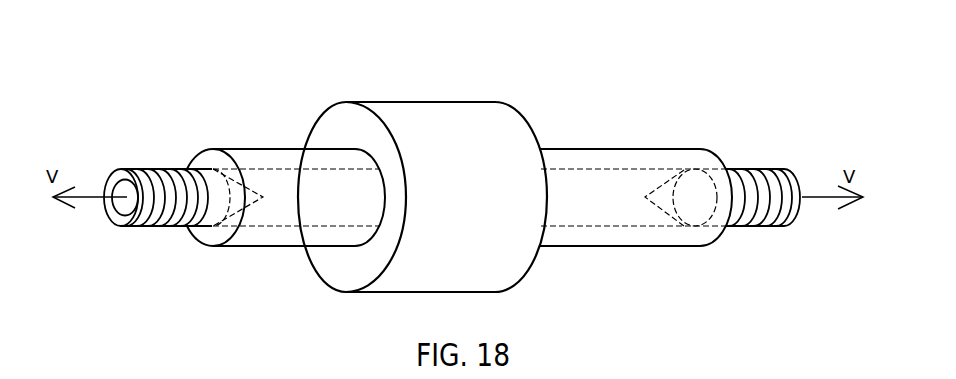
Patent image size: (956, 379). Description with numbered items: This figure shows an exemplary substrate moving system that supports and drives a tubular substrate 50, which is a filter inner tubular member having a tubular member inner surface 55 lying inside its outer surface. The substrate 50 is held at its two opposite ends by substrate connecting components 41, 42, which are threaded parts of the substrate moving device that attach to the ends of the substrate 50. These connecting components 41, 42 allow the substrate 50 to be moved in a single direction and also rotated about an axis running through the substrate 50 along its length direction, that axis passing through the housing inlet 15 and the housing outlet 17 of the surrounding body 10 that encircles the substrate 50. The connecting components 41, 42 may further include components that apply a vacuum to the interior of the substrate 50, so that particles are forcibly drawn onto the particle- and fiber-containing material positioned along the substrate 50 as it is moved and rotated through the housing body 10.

The cylindrical body 10 is at (429, 173).
The housing inlet 15 is at (521, 107).
The housing outlet 17 is at (328, 124).
The substrate 50 is at (265, 237).
The tubular member inner surface 55 is at (320, 224).
The substrate connecting component 41 is at (777, 227).
The substrate connecting component 42 is at (152, 228).